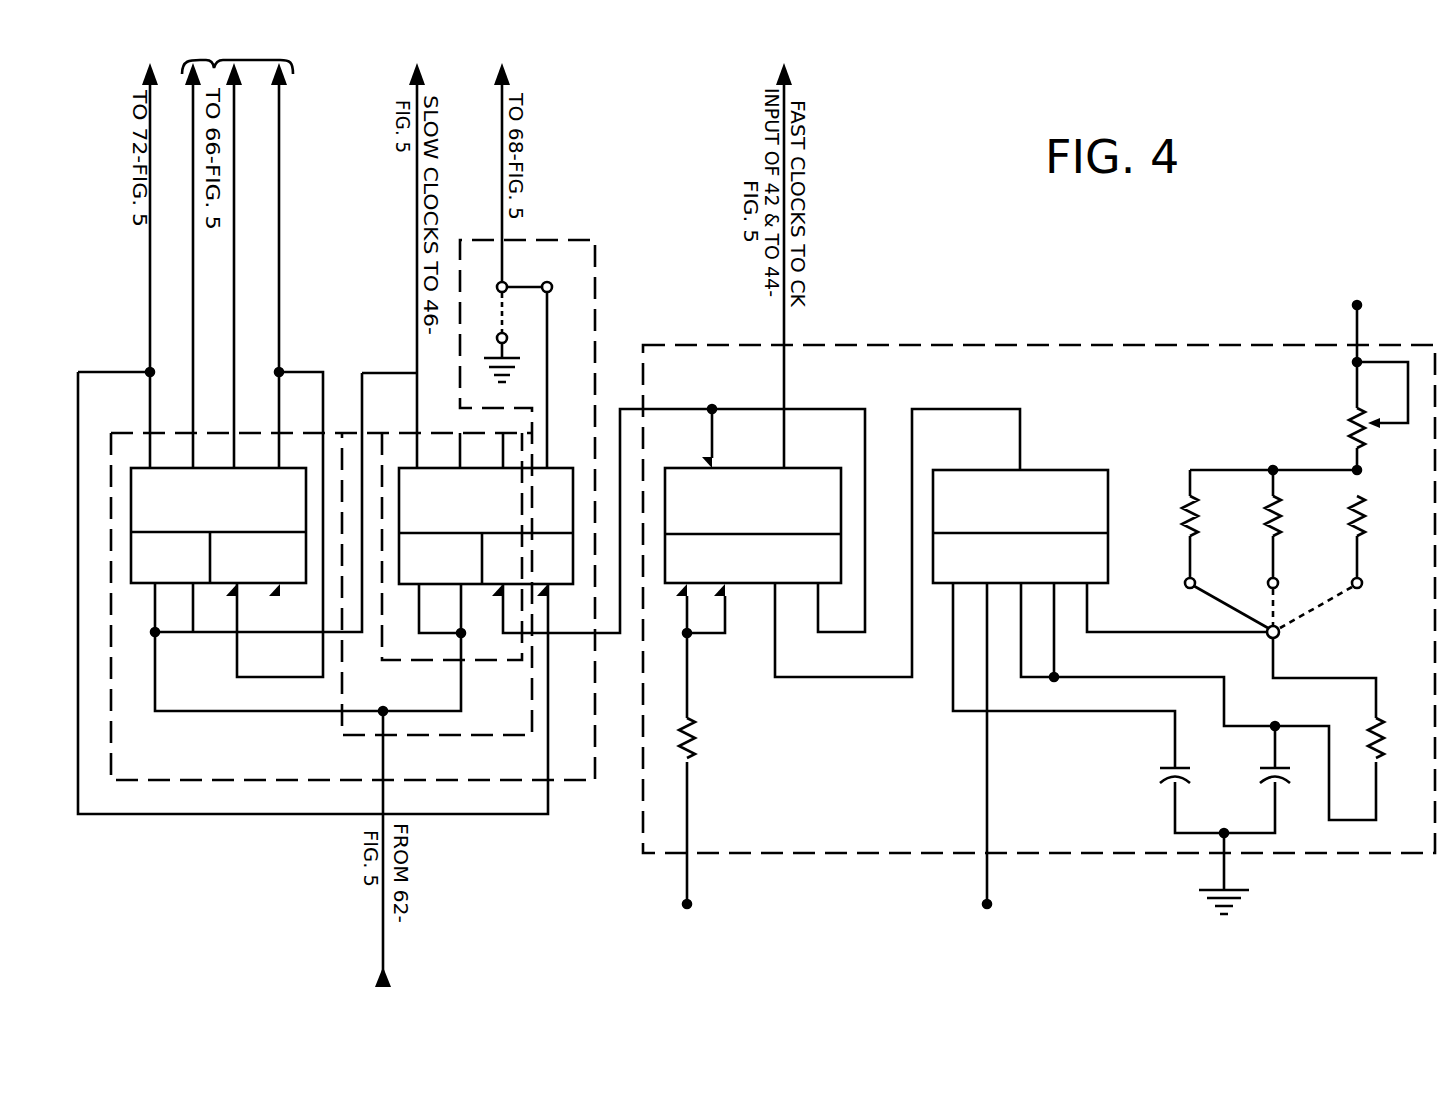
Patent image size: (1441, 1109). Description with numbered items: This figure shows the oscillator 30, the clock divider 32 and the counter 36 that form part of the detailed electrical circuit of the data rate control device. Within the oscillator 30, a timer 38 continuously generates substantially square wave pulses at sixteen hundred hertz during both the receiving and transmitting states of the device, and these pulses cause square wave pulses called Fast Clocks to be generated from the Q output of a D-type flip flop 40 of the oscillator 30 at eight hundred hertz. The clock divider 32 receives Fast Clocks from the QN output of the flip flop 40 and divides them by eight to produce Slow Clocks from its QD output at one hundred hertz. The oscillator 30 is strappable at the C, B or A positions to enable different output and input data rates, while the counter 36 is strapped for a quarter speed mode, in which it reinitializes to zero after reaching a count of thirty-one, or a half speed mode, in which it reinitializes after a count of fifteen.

The oscillator 30 is at (838, 855).
The clock divider 32 is at (400, 433).
The counter 36 is at (260, 780).
The timer 38 is at (1085, 470).
The D-type flip flop 40 is at (815, 470).